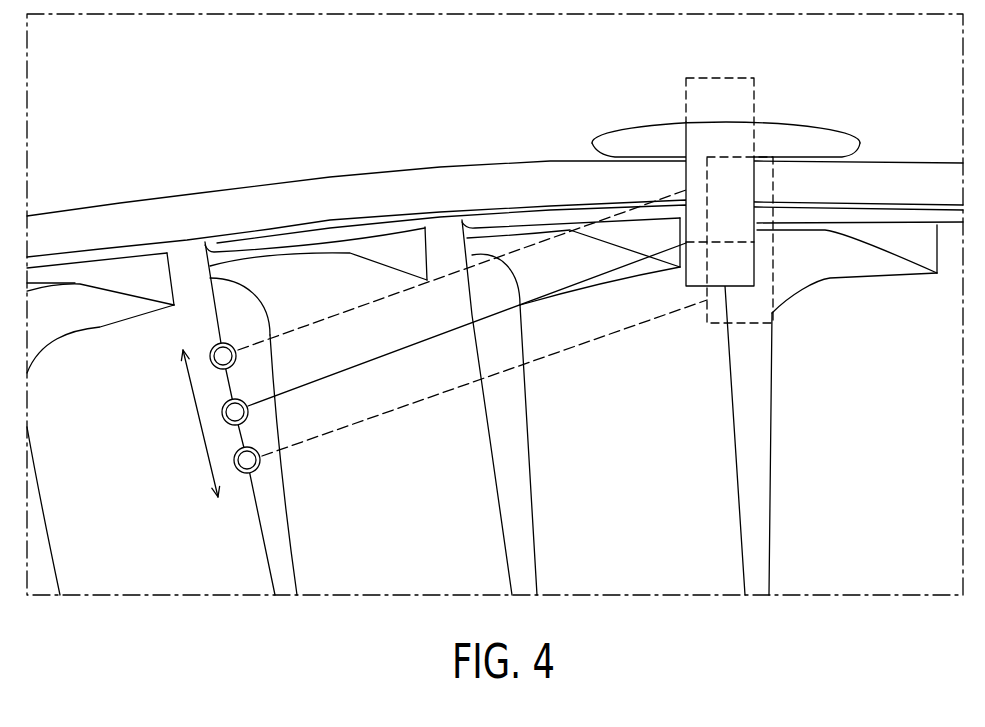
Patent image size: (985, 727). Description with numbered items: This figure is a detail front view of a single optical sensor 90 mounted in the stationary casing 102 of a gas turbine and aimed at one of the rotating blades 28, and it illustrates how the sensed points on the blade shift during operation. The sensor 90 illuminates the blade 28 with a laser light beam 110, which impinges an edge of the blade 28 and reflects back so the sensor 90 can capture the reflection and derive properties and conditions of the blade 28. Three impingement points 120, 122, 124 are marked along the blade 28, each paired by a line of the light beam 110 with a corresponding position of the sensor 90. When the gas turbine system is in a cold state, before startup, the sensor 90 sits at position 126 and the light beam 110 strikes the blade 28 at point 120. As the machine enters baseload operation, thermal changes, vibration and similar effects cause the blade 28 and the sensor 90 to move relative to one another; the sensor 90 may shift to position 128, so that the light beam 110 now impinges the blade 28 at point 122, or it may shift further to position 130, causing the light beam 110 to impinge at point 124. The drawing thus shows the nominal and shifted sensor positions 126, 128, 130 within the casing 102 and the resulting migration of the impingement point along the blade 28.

The blade 28 is at (150, 545).
The sensor 90 is at (726, 194).
The stationary casing 102 is at (345, 100).
The laser light beam 110 is at (445, 277).
The impingement point 120 is at (248, 412).
The impingement point 122 is at (259, 463).
The impingement point 124 is at (225, 343).
The sensor position 126 is at (755, 270).
The sensor position 128 is at (776, 283).
The sensor position 130 is at (798, 142).